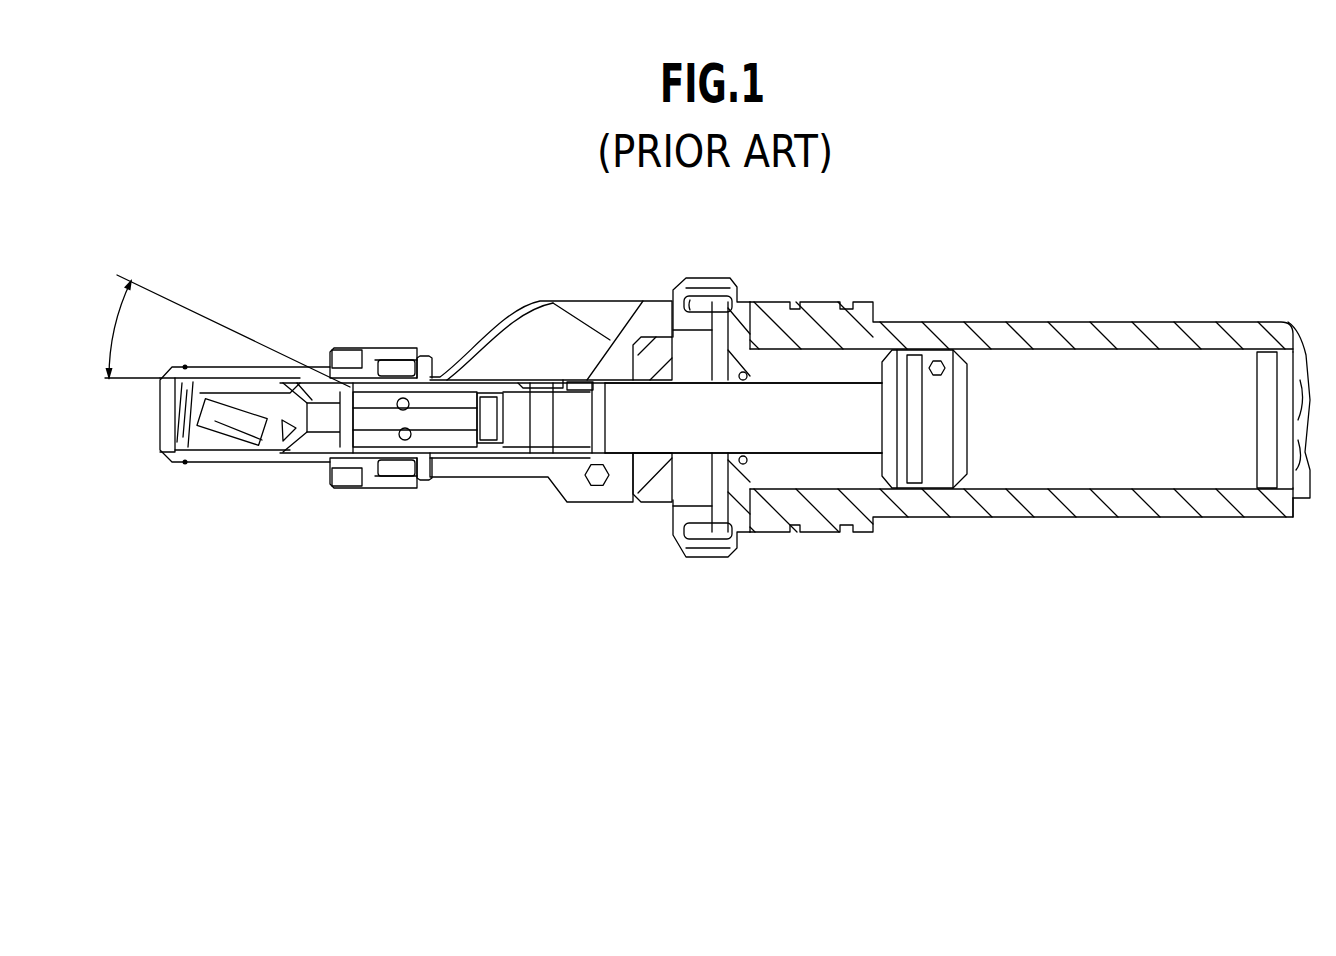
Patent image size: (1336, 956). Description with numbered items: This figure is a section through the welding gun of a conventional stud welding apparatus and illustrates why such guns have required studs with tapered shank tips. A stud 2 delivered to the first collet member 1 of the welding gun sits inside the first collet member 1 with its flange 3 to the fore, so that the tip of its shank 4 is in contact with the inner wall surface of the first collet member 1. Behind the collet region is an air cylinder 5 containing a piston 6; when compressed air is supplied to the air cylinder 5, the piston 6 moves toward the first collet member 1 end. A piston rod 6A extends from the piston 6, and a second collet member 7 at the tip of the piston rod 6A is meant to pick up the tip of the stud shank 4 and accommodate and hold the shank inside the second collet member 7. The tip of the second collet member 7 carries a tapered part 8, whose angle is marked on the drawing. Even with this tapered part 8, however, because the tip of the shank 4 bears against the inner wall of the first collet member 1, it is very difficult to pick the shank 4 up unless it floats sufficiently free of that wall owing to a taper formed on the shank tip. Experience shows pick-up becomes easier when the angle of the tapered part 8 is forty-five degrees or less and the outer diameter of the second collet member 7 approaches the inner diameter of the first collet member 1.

The first collet member 1 is at (253, 453).
The stud 2 is at (240, 398).
The flange 3 is at (153, 431).
The shank 4 is at (220, 423).
The air cylinder 5 is at (1060, 333).
The piston 6 is at (931, 459).
The piston rod 6A is at (636, 424).
The second collet member 7 is at (316, 442).
The tapered part 8 is at (283, 392).